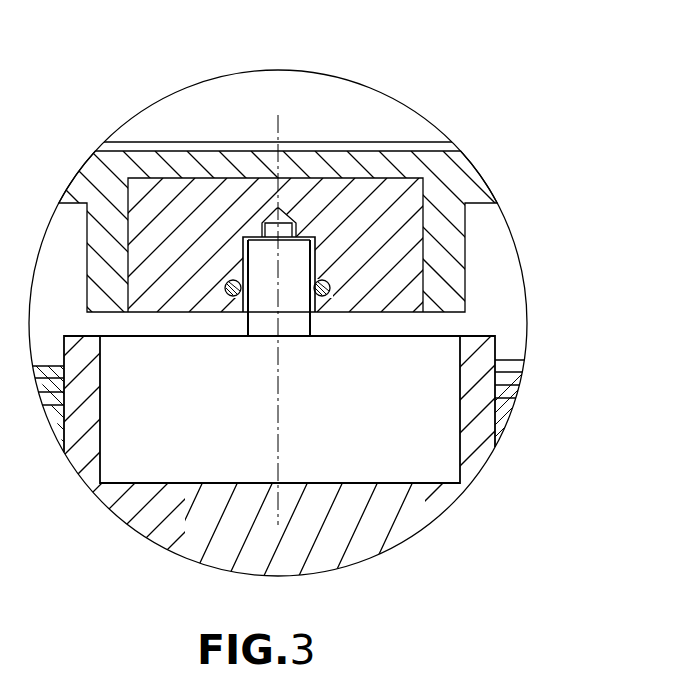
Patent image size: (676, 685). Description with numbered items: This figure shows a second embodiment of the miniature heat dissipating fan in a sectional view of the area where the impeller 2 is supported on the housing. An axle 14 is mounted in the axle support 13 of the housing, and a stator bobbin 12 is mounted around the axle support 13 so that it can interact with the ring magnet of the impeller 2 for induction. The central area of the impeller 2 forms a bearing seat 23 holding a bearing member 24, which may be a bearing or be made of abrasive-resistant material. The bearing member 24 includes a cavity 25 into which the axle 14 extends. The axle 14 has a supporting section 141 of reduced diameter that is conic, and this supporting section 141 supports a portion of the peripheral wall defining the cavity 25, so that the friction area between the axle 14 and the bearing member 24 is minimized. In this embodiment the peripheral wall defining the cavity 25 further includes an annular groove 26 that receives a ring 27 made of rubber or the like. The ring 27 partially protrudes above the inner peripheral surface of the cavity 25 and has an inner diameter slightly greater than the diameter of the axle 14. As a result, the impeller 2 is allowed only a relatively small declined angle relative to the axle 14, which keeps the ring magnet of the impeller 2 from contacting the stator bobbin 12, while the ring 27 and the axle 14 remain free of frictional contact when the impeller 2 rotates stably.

The impeller 2 is at (403, 163).
The bearing seat 23 is at (455, 253).
The bearing member 24 is at (173, 205).
The supporting section 141 is at (277, 206).
The cavity 25 is at (293, 220).
The axle 14 is at (293, 316).
The annular groove 26 is at (225, 305).
The ring 27 is at (322, 288).
The axle support 13 is at (477, 433).
The stator bobbin 12 is at (518, 383).